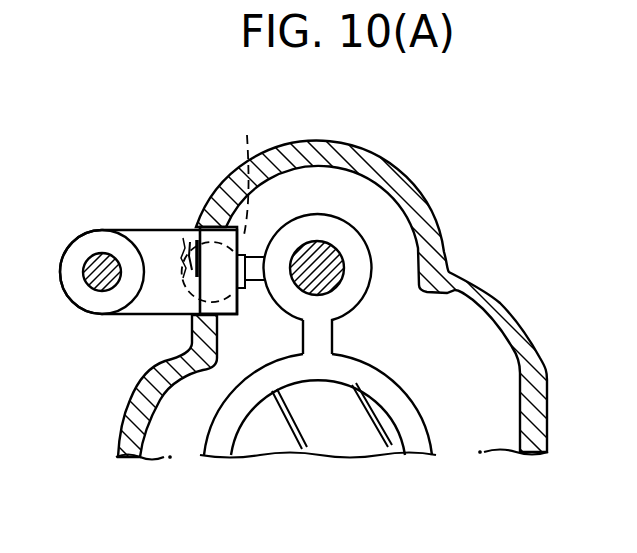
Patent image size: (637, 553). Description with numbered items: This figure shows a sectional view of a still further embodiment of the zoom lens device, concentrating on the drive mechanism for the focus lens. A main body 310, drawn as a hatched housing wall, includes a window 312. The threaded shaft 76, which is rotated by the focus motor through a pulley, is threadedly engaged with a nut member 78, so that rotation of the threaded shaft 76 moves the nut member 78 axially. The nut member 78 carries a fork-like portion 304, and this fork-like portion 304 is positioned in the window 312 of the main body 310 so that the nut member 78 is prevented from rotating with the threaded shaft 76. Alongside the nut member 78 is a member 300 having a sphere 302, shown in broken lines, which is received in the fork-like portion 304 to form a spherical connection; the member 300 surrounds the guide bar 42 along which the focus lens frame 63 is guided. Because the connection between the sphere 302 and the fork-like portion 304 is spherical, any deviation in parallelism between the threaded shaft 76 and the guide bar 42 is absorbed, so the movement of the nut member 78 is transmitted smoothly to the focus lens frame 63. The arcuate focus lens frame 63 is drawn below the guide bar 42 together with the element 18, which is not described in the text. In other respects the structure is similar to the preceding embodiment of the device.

The shaft 18 is at (328, 437).
The guide bar 42 is at (330, 262).
The focus lens frame 63 is at (387, 385).
The threaded shaft 76 is at (90, 262).
The nut member 78 is at (105, 240).
The member 300 is at (317, 213).
The sphere 302 is at (227, 204).
The fork-like portion 304 is at (163, 297).
The main body 310 is at (368, 160).
The window 312 is at (203, 230).